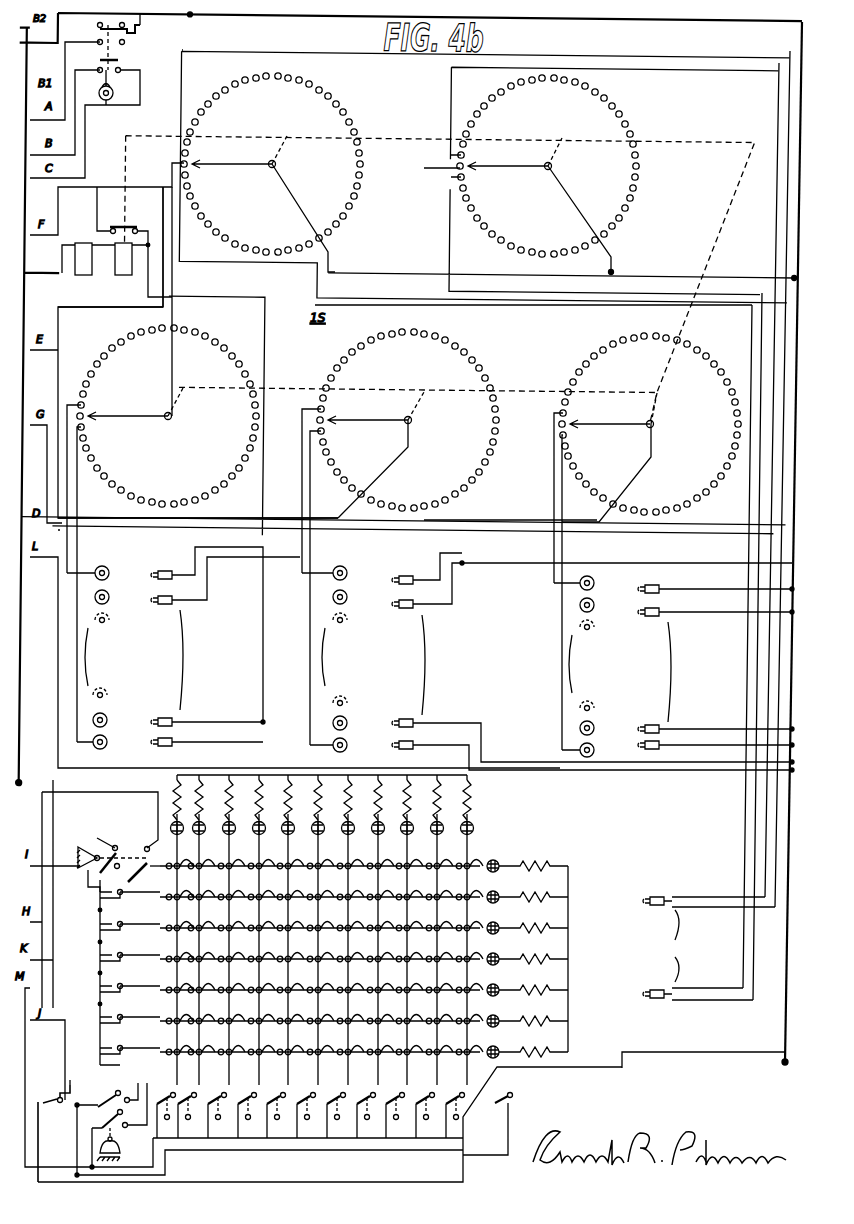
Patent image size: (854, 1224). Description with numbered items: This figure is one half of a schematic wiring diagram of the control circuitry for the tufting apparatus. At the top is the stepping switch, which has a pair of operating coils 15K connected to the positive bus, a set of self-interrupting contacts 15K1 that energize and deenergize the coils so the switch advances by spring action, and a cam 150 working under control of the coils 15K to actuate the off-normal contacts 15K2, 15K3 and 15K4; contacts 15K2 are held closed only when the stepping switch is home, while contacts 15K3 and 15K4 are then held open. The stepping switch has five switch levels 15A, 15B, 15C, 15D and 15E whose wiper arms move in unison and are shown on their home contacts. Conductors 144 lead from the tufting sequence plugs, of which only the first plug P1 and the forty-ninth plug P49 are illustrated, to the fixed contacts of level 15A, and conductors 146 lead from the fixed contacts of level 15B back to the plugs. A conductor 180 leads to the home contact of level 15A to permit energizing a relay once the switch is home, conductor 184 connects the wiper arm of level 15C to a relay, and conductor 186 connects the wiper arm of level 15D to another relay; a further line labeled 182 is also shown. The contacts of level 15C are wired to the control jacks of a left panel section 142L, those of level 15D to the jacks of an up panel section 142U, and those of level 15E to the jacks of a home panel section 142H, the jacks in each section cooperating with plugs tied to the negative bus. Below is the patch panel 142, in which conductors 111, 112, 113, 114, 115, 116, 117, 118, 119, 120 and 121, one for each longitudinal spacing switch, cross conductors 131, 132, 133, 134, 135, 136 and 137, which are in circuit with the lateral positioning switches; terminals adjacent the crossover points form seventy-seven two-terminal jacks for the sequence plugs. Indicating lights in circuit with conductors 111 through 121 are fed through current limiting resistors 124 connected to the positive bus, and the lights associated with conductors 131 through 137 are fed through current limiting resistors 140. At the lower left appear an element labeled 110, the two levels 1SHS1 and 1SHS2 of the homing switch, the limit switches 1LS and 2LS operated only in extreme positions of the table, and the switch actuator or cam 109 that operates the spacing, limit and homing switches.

The switch level 15A is at (356, 114).
The switch level 15B is at (638, 118).
The switch level 15C is at (231, 352).
The switch level 15D is at (479, 364).
The switch level 15E is at (709, 358).
The operating coils 15K is at (106, 268).
The self-interrupting contacts 15K1 is at (139, 230).
The off-normal contacts 15K2 is at (136, 30).
The off-normal contacts 15K3 is at (125, 46).
The off-normal contacts 15K4 is at (125, 64).
The cam 150 is at (106, 100).
The conductor 144 is at (308, 54).
The conductor 146 is at (712, 80).
The conductor 180 is at (74, 308).
The conductor 182 is at (124, 533).
The conductor 184 is at (164, 304).
The conductor 186 is at (223, 516).
The patch panel 142 is at (516, 824).
The left panel section 142L is at (207, 692).
The up panel section 142U is at (447, 692).
The home panel section 142H is at (690, 696).
The current limiting resistors 140 is at (540, 888).
The current limiting resistors 124 is at (262, 800).
The selector switch 110 is at (76, 870).
The switch actuator or cam 109 is at (118, 1152).
The conductor 131 is at (150, 877).
The conductor 132 is at (145, 898).
The conductor 133 is at (145, 929).
The conductor 134 is at (145, 960).
The conductor 135 is at (145, 991).
The conductor 136 is at (145, 1022).
The conductor 137 is at (145, 1053).
The conductor 111 is at (177, 1102).
The conductor 112 is at (203, 1102).
The conductor 113 is at (233, 1102).
The conductor 114 is at (263, 1102).
The conductor 115 is at (292, 1102).
The conductor 116 is at (322, 1102).
The conductor 117 is at (352, 1102).
The conductor 118 is at (382, 1102).
The conductor 119 is at (411, 1102).
The conductor 120 is at (441, 1102).
The conductor 121 is at (470, 1102).
The limit switch 1LS is at (56, 1104).
The limit switch 2LS is at (514, 1104).
The homing switch level 1SHS1 is at (107, 1094).
The homing switch level 1SHS2 is at (123, 1109).
The tufting sequence plug P1 is at (663, 892).
The tufting sequence plug P49 is at (663, 986).